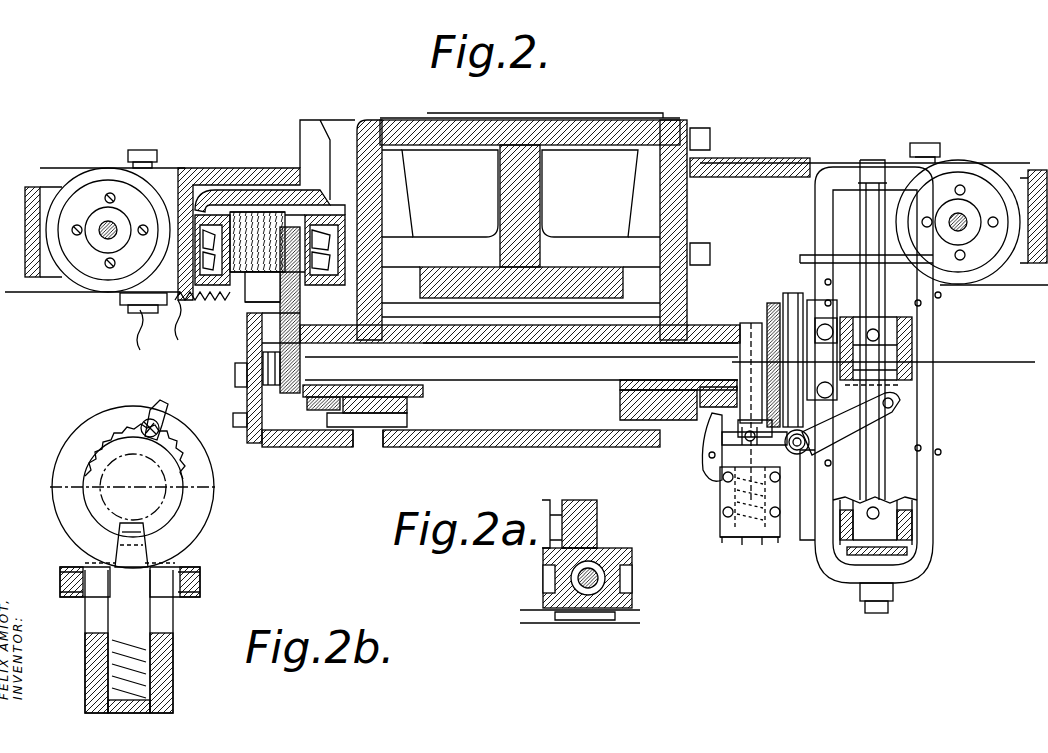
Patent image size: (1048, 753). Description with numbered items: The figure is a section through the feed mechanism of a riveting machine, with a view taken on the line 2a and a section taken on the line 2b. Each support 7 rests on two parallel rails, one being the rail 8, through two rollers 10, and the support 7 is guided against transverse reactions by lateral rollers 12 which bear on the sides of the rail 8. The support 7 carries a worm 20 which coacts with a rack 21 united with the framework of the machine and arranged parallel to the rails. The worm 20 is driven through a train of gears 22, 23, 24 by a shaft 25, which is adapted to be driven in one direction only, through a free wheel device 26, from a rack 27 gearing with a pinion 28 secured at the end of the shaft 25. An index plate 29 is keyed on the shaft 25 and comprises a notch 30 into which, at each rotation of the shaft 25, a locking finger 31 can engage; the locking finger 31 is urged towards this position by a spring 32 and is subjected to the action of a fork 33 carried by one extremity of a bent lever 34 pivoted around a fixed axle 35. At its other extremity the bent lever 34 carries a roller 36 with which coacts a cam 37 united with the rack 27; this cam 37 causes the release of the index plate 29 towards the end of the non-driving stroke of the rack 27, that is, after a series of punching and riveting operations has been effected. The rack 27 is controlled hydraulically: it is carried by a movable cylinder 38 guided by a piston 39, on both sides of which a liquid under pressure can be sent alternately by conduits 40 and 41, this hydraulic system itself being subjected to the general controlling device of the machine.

In FIG. 2, the support 7 is at (410, 135).
In FIG. 2, the rail 8 is at (140, 330).
In FIG. 2, the rollers 10 is at (75, 272).
In FIG. 2, the lateral rollers 12 is at (128, 308).
In FIG. 2, the worm 20 is at (258, 212).
In FIG. 2B, the rack 21 is at (160, 400).
In FIG. 2, the gear 22 is at (305, 215).
In FIG. 2, the gear 23 is at (255, 315).
In FIG. 2, the gear 24 is at (247, 395).
In FIG. 2, the shaft 25 is at (365, 410).
In FIG. 2A, the shaft 25 is at (555, 510).
In FIG. 2B, the shaft 25 is at (128, 500).
In FIG. 2, the free wheel device 26 is at (790, 340).
In FIG. 2B, the free wheel device 26 is at (178, 452).
In FIG. 2A, the rack 27 is at (597, 545).
In FIG. 2, the pinion 28 is at (900, 385).
In FIG. 2A, the pinion 28 is at (597, 515).
In FIG. 2, the index plate 29 is at (752, 330).
In FIG. 2B, the index plate 29 is at (95, 508).
In FIG. 2, the notch 30 is at (753, 411).
In FIG. 2B, the notch 30 is at (180, 530).
In FIG. 2, the locking finger 31 is at (712, 440).
In FIG. 2B, the locking finger 31 is at (150, 545).
In FIG. 2, the spring 32 is at (720, 495).
In FIG. 2B, the spring 32 is at (100, 680).
In FIG. 2, the fork 33 is at (745, 445).
In FIG. 2B, the fork 33 is at (65, 567).
In FIG. 2, the bent lever 34 is at (747, 552).
In FIG. 2B, the bent lever 34 is at (200, 597).
In FIG. 2, the fixed axle 35 is at (815, 540).
In FIG. 2, the roller 36 is at (905, 412).
In FIG. 2A, the roller 36 is at (625, 617).
In FIG. 2, the cam 37 is at (900, 490).
In FIG. 2, the movable cylinder 38 is at (905, 515).
In FIG. 2, the piston 39 is at (916, 360).
In FIG. 2A, the piston 39 is at (598, 578).
In FIG. 2, the conduit 40 is at (890, 340).
In FIG. 2, the conduit 41 is at (905, 527).
In FIG. 2, the section line 2a is at (883, 350).
In FIG. 2, the section line 2b is at (795, 330).